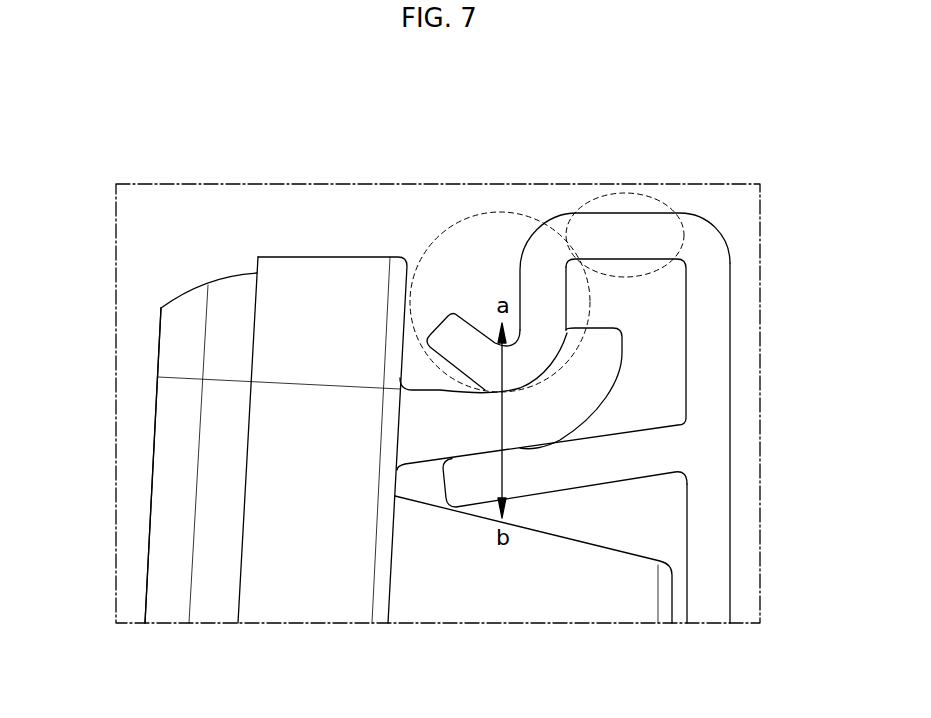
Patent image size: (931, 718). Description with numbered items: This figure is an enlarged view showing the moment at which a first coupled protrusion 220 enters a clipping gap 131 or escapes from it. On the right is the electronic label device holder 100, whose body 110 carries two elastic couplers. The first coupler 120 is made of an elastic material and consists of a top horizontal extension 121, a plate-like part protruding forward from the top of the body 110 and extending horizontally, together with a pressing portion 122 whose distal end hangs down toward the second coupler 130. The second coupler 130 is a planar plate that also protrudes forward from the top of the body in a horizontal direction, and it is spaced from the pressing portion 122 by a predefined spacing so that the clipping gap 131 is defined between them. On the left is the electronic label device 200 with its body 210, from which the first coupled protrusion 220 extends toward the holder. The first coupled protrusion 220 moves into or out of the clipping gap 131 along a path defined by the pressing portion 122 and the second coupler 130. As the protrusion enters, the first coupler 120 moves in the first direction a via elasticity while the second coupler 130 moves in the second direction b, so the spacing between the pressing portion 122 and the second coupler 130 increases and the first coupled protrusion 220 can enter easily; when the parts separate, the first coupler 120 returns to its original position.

The electronic label device holder 100 is at (739, 195).
The body 110 is at (724, 559).
The first coupler 120 is at (478, 122).
The top horizontal extension 121 is at (625, 193).
The pressing portion 122 is at (495, 210).
The second coupler 130 is at (545, 484).
The clipping gap 131 is at (524, 432).
The electronic label device 200 is at (151, 197).
The body 210 is at (153, 467).
The first coupled protrusion 220 is at (420, 405).